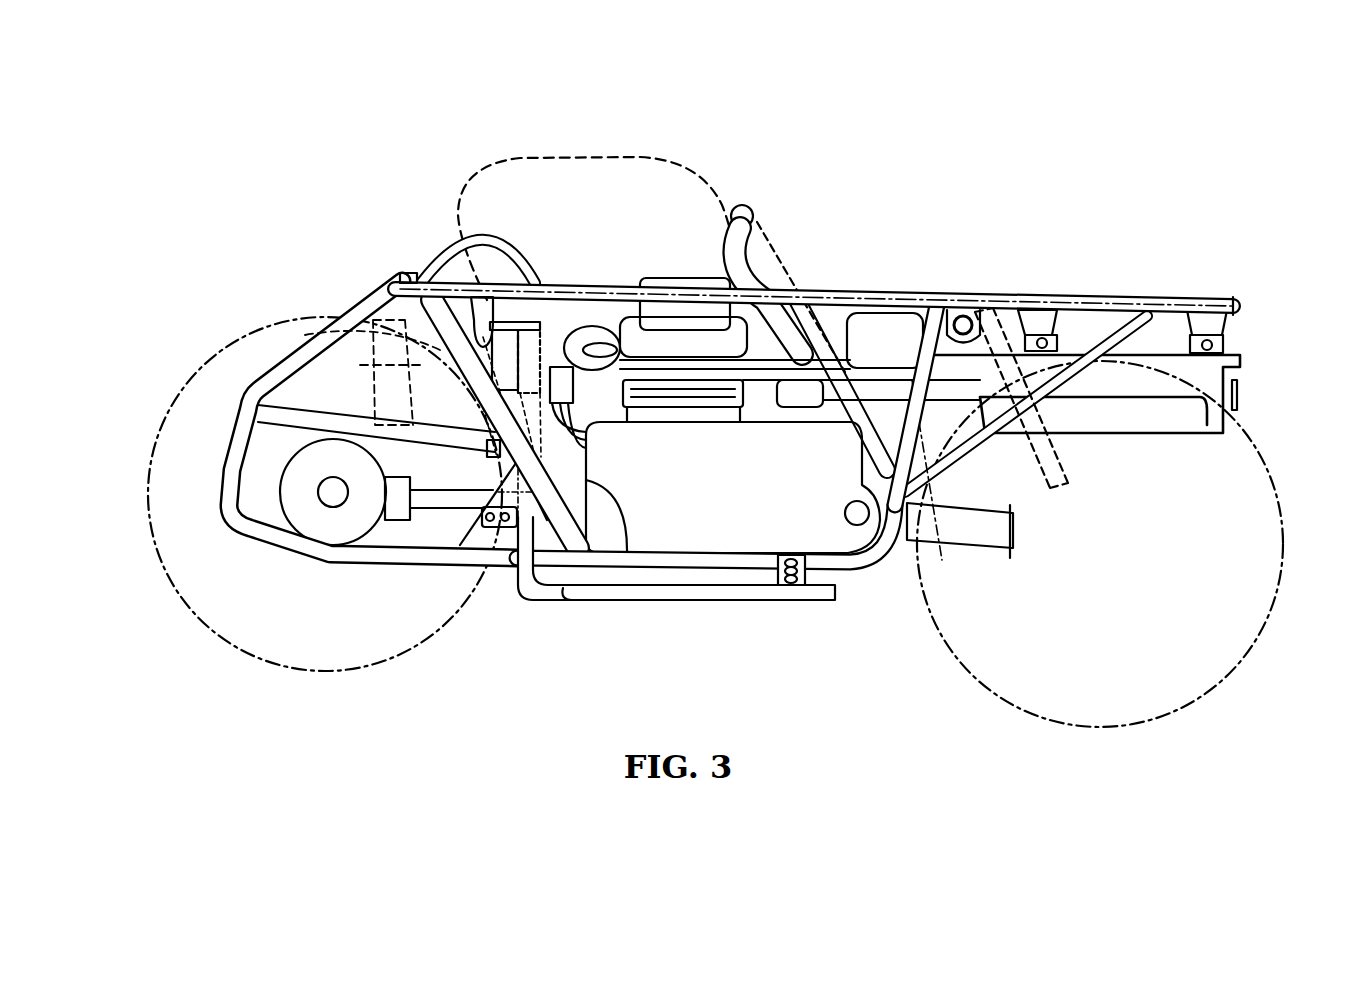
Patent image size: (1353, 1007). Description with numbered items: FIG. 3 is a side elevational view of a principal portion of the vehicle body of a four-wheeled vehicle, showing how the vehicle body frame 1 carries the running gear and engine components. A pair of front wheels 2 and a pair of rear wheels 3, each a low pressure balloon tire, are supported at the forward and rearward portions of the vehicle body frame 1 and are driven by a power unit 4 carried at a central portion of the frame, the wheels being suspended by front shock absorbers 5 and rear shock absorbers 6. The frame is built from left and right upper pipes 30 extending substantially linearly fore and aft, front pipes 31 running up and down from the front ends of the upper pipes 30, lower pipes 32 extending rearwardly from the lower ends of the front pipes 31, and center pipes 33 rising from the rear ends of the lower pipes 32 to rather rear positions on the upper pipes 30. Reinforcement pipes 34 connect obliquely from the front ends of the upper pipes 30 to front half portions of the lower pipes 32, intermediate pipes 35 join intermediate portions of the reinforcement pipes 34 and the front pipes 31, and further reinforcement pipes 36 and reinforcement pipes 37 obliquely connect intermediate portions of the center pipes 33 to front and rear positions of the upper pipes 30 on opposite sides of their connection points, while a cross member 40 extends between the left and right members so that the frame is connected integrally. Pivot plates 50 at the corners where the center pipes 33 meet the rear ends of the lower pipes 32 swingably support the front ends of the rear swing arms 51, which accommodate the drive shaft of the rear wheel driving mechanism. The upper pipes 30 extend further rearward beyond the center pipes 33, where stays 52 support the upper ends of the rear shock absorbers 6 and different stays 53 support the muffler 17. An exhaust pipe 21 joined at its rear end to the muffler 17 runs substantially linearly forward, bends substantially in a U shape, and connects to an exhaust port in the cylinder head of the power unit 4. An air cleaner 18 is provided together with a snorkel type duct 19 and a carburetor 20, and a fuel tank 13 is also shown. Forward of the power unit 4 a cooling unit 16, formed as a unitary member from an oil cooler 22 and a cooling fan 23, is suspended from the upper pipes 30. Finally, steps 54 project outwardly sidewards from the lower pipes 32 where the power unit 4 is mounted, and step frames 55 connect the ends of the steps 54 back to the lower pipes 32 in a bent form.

The vehicle body frame 1 is at (363, 246).
The front wheels 2 is at (228, 630).
The rear wheels 3 is at (1188, 671).
The power unit 4 is at (711, 520).
The front shock absorbers 5 is at (305, 300).
The rear shock absorbers 6 is at (1085, 452).
The fuel tank 13 is at (628, 180).
The cooling unit 16 is at (508, 316).
The muffler 17 is at (1240, 440).
The air cleaner 18 is at (900, 335).
The snorkel type duct 19 is at (790, 250).
The carburetor 20 is at (817, 290).
The exhaust pipe 21 is at (583, 327).
The oil cooler 22 is at (345, 318).
The cooling fan 23 is at (547, 332).
The upper pipes 30 is at (620, 282).
The front pipes 31 is at (290, 357).
The lower pipes 32 is at (432, 558).
The center pipes 33 is at (958, 450).
The reinforcement pipes 34 is at (623, 550).
The intermediate pipes 35 is at (283, 428).
The reinforcement pipes 36 is at (843, 413).
The reinforcement pipes 37 is at (948, 518).
The cross member 40 is at (405, 273).
The pivot plates 50 is at (847, 542).
The rear swing arms 51 is at (910, 533).
The stays 52 is at (975, 318).
The stays 53 is at (1047, 320).
The steps 54 is at (792, 590).
The step frames 55 is at (576, 592).